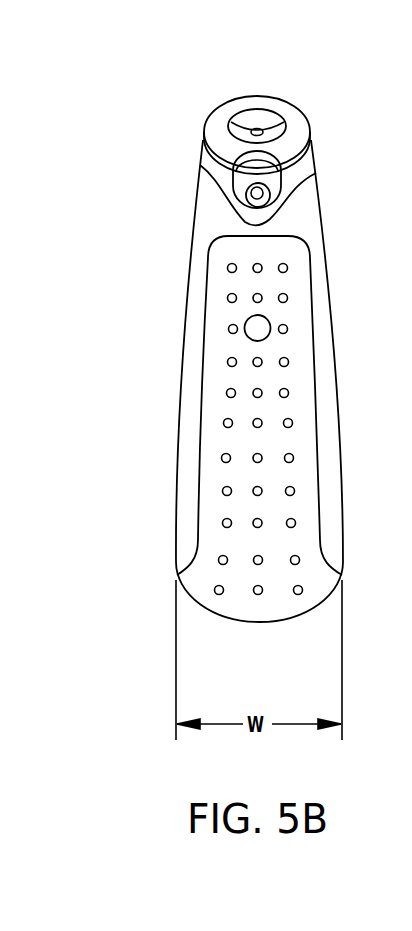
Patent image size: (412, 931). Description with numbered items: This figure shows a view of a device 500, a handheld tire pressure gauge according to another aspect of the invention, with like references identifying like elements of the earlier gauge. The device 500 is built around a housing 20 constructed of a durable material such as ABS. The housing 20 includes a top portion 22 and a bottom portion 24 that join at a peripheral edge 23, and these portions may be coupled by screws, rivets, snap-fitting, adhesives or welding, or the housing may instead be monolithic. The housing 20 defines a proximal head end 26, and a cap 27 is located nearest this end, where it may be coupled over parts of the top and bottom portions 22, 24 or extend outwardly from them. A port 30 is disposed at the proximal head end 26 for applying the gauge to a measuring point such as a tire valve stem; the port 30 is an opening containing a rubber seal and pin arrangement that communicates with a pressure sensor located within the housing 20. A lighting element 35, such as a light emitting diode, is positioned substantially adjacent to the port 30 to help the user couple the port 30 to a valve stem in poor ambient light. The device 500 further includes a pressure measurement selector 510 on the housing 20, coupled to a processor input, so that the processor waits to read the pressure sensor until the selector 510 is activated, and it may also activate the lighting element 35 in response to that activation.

The device 500 is at (127, 311).
The housing 20 is at (192, 480).
The top portion 22 is at (318, 283).
The peripheral edge 23 is at (254, 229).
The bottom portion 24 is at (188, 355).
The proximal head end 26 is at (218, 133).
The cap 27 is at (288, 143).
The port 30 is at (264, 124).
The lighting element 35 is at (263, 190).
The pressure measurement selector 510 is at (253, 335).